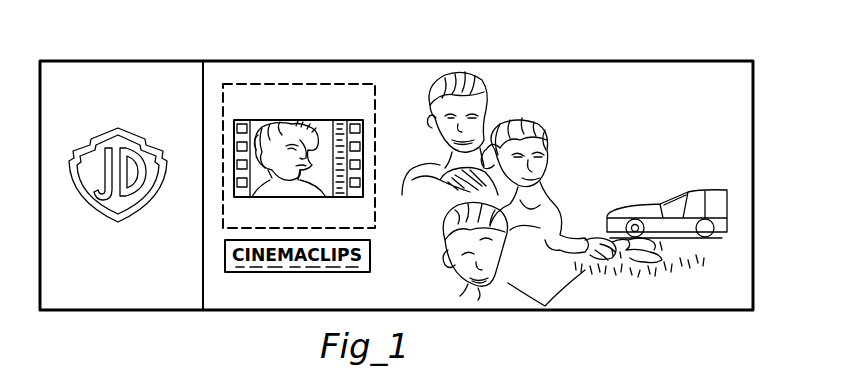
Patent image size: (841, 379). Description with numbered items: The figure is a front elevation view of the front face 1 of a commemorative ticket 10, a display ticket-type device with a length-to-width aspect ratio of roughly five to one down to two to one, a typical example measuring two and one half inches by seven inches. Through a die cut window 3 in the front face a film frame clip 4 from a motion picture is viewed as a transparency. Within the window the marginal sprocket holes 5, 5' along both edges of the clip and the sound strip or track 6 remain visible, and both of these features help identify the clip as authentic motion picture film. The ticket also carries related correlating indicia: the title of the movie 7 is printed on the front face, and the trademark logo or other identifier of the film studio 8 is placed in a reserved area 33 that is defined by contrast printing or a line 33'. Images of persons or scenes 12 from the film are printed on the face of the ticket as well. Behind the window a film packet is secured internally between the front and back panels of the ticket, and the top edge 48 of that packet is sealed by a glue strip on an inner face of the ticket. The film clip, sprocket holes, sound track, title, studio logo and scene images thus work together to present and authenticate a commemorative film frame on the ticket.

The commemorative ticket 10 is at (664, 54).
The trademark logo or identifier of the film studio 8 is at (72, 212).
The reserved area 33 is at (83, 167).
The contrast printing or line 33' is at (175, 185).
The top edge of film packet 48 is at (376, 112).
The front face 1 is at (320, 187).
The marginal sprocket holes 5 is at (298, 143).
The die cut window 3 is at (268, 122).
The film frame clip 4 is at (322, 124).
The sound strip or track 6 is at (345, 124).
The marginal sprocket holes 5' is at (377, 155).
The title of the movie 7 is at (564, 184).
The images of persons or scenes 12 is at (545, 308).